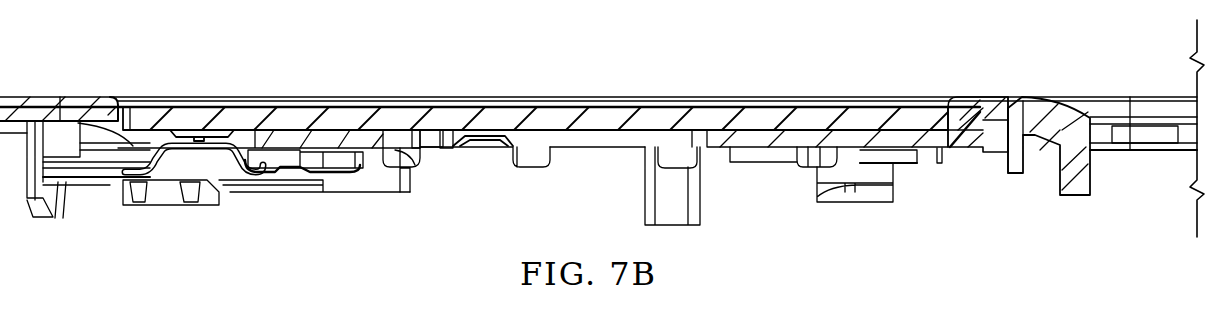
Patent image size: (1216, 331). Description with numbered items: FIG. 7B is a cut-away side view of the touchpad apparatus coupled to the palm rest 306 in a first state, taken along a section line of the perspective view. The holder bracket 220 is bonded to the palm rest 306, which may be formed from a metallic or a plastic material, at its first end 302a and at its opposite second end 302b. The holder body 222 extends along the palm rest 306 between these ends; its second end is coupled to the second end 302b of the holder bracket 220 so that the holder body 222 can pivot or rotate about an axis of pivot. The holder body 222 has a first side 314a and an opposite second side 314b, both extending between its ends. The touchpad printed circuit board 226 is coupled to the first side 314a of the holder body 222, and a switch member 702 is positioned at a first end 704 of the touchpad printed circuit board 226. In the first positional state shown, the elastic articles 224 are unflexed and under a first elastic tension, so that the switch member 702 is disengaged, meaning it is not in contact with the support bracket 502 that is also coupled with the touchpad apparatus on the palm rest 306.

The palm rest 306 is at (45, 101).
The first end of the holder bracket 302a is at (72, 101).
The switch member 702 is at (197, 133).
The first end of the touchpad PCB 704 is at (222, 84).
The holder body 222 is at (317, 133).
The first side of the holder body 314a is at (393, 123).
The touchpad printed circuit board 226 is at (550, 121).
The second end of the holder bracket 302b is at (997, 108).
The elastic articles 224 is at (97, 137).
The support bracket 502 is at (282, 178).
The second side of the holder body 314b is at (420, 165).
The holder bracket 220 is at (926, 158).